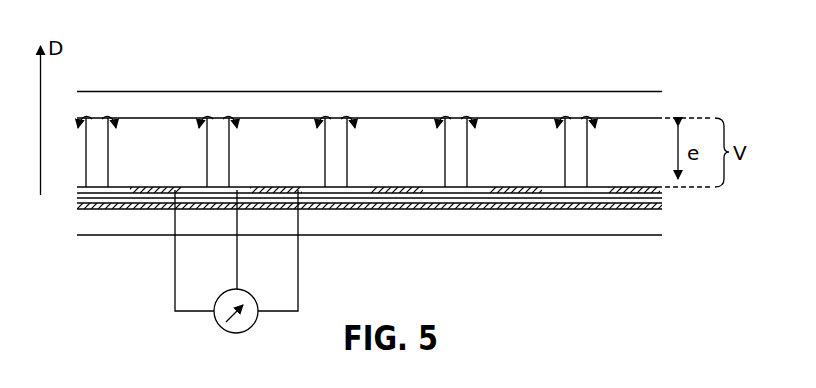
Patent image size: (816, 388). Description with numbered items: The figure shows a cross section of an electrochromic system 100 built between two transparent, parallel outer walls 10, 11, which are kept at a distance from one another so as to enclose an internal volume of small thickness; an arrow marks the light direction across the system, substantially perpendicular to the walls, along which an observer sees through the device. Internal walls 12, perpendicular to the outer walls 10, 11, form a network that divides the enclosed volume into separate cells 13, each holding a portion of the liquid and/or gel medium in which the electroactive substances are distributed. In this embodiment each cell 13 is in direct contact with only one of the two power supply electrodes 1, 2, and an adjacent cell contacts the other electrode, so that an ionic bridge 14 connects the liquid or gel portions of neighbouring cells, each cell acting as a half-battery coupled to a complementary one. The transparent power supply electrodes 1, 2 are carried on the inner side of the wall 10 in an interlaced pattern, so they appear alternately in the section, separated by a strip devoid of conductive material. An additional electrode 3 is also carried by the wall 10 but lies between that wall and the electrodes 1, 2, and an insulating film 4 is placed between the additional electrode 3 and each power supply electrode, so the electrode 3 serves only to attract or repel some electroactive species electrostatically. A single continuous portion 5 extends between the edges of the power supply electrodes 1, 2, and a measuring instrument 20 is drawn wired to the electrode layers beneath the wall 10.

The electrochromic system 100 is at (661, 56).
The outer wall 11 is at (655, 108).
The internal walls 12 is at (456, 130).
The cells 13 is at (170, 166).
The ionic bridge 14 is at (199, 122).
The outer wall 10 is at (652, 219).
The transparent electrode 1 is at (148, 199).
The transparent electrode 2 is at (268, 189).
The additional electrode 3 is at (84, 210).
The insulating film 4 is at (107, 204).
The portion 5 is at (206, 194).
The measuring device 20 is at (254, 326).